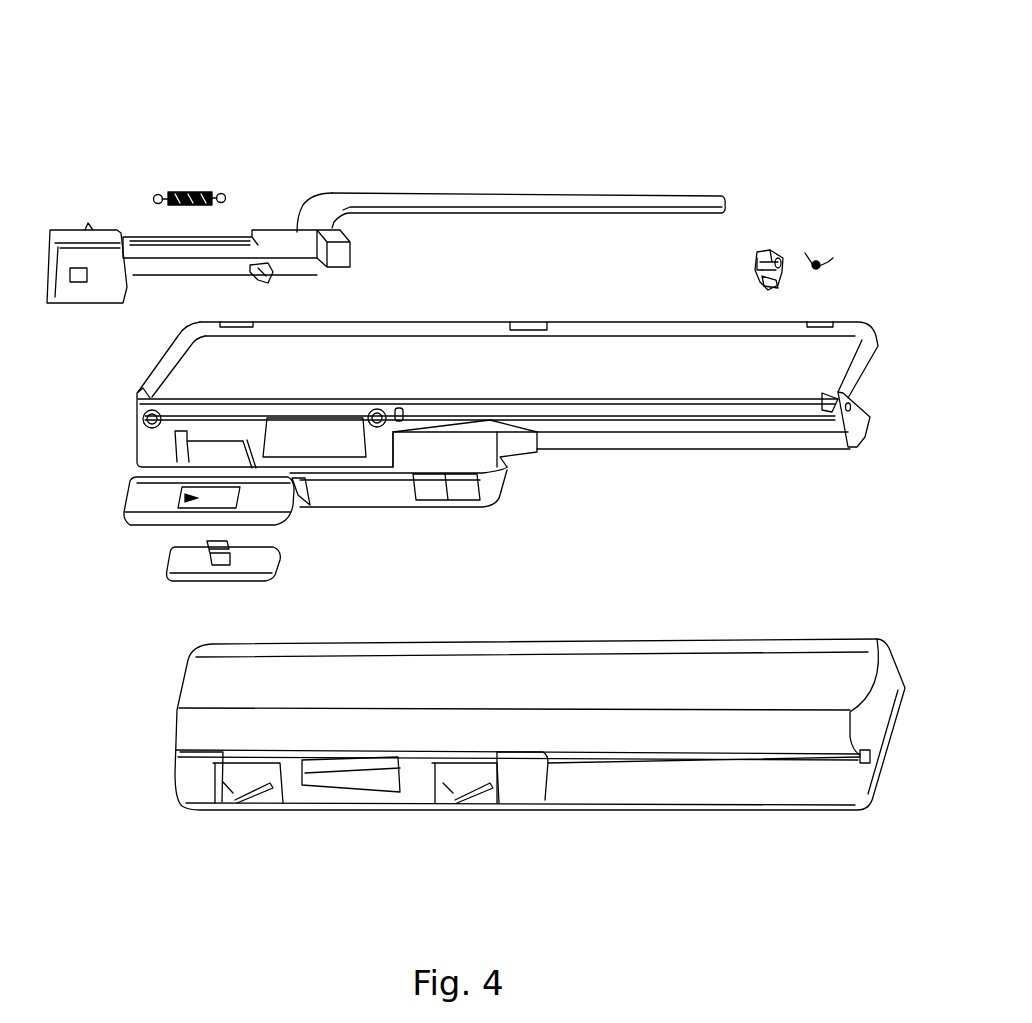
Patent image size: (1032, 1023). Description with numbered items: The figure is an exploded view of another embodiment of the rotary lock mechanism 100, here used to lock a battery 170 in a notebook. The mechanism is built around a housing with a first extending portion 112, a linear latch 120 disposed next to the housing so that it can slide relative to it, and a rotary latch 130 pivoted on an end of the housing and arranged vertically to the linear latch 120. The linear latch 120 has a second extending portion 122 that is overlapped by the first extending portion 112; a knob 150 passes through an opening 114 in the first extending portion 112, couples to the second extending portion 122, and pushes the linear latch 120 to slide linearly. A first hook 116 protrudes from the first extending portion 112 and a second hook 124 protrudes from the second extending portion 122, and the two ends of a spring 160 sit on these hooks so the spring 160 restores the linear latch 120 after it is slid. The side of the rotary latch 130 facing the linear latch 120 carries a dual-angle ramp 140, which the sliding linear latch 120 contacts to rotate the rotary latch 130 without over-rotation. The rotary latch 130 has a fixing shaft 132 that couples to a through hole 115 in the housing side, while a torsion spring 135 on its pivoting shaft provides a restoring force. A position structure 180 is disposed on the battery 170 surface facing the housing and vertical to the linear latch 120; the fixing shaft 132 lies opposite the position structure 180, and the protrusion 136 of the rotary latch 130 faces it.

The rotary lock mechanism 100 is at (777, 106).
The first extending portion 112 is at (262, 497).
The opening 114 is at (178, 497).
The through hole 115 is at (868, 403).
The first hook 116 is at (305, 491).
The linear latch 120 is at (500, 197).
The second extending portion 122 is at (107, 292).
The second hook 124 is at (271, 281).
The rotary latch 130 is at (760, 252).
The fixing shaft 132 is at (785, 256).
The torsion spring 135 is at (826, 260).
The protrusion 136 is at (757, 284).
The dual-angle ramp 140 is at (755, 262).
The knob 150 is at (189, 567).
The spring 160 is at (195, 190).
The battery 170 is at (608, 685).
The position structure 180 is at (866, 770).